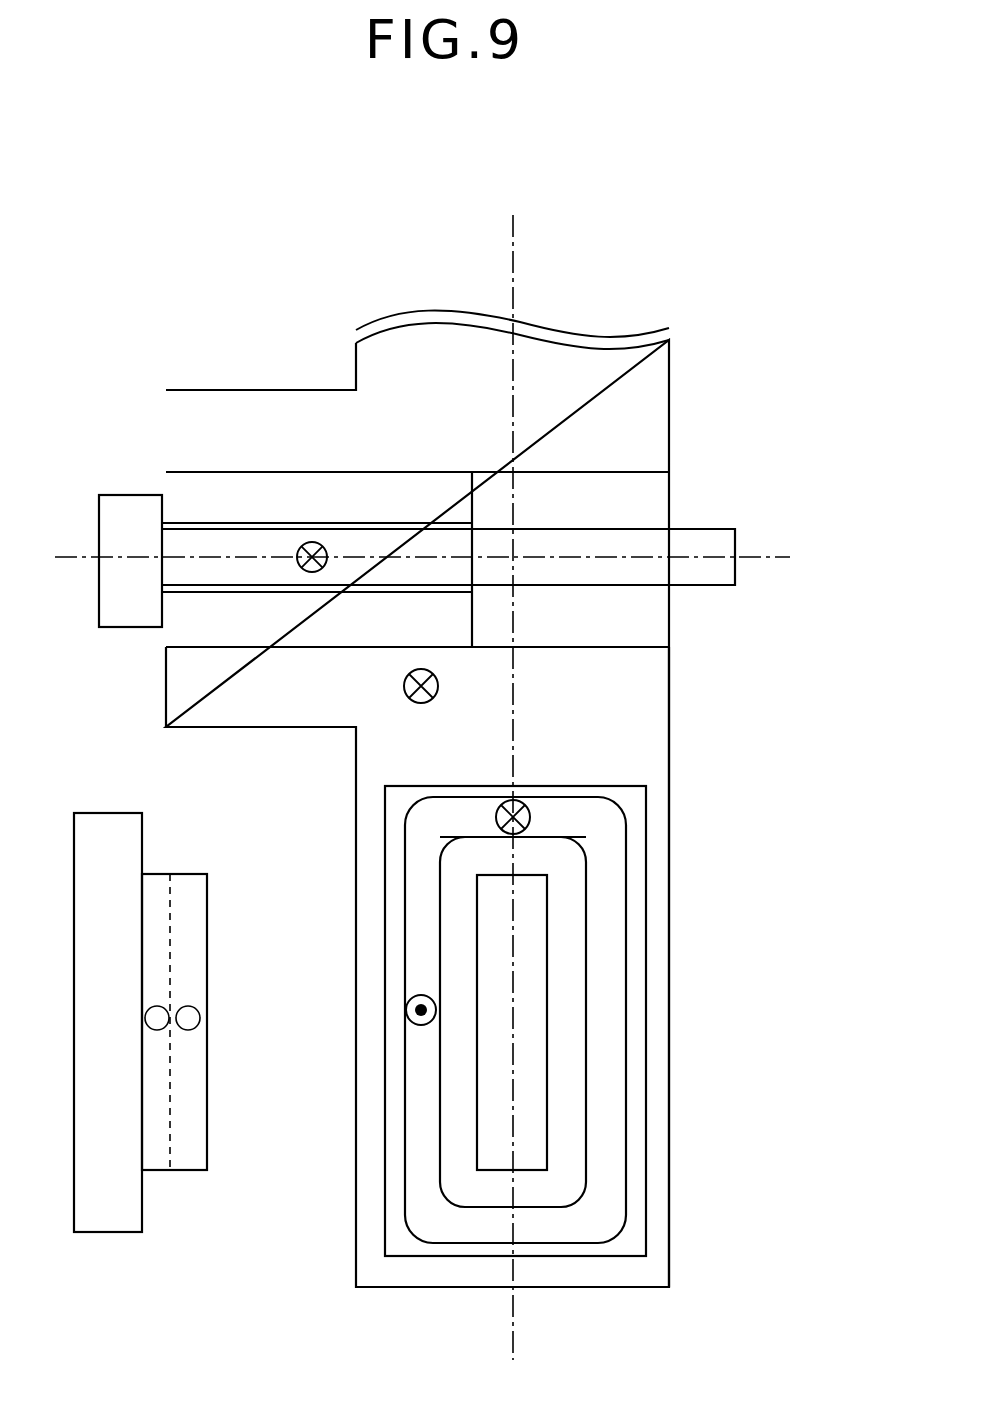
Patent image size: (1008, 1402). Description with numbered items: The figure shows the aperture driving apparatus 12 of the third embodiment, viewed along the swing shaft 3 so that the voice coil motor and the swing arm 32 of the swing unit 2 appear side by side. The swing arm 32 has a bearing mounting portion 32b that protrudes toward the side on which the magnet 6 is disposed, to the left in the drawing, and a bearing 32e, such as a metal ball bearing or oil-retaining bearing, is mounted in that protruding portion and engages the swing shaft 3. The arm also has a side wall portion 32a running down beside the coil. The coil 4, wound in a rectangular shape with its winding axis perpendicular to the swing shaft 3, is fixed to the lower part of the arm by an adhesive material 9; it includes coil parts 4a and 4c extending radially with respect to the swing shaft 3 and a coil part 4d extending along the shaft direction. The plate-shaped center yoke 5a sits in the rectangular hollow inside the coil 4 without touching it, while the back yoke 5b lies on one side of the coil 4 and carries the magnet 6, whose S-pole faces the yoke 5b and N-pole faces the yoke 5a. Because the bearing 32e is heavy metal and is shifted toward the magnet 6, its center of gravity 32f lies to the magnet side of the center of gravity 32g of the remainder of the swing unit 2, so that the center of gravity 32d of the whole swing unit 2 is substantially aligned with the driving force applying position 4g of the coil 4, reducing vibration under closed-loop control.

The aperture driving apparatus 12 is at (776, 258).
The swing unit 2 is at (691, 352).
The swing arm 32 is at (657, 404).
The side wall portion 32a is at (662, 737).
The bearing mounting portion 32b is at (282, 683).
The center of gravity of the swing unit 32d is at (436, 677).
The bearing 32e is at (354, 503).
The center of gravity of the bearing 32f is at (306, 541).
The center of gravity of the swing unit part except the bearing 32g is at (530, 818).
The swing shaft 3 is at (718, 590).
The coil 4 is at (610, 1037).
The coil part 4a is at (412, 1147).
The coil part 4c is at (608, 1120).
The coil part 4d is at (449, 825).
The driving force applying position 4g is at (407, 1024).
The center yoke 5a is at (537, 1143).
The back yoke 5b is at (108, 1234).
The magnet 6 is at (168, 1172).
The adhesive material 9 is at (627, 1248).